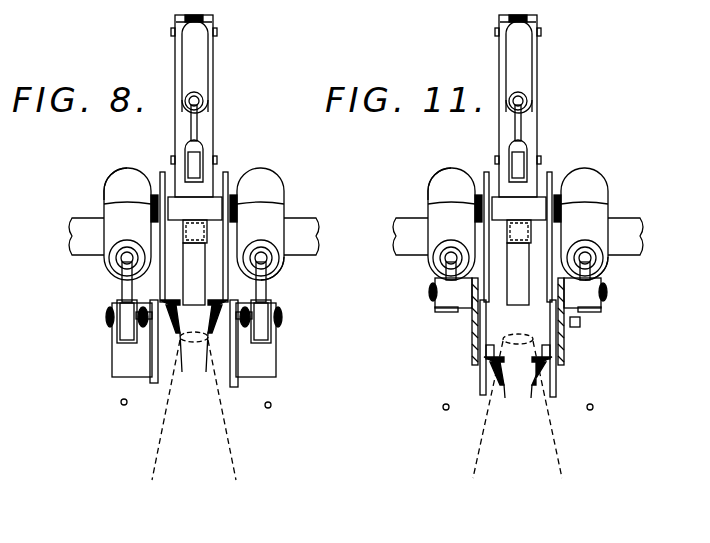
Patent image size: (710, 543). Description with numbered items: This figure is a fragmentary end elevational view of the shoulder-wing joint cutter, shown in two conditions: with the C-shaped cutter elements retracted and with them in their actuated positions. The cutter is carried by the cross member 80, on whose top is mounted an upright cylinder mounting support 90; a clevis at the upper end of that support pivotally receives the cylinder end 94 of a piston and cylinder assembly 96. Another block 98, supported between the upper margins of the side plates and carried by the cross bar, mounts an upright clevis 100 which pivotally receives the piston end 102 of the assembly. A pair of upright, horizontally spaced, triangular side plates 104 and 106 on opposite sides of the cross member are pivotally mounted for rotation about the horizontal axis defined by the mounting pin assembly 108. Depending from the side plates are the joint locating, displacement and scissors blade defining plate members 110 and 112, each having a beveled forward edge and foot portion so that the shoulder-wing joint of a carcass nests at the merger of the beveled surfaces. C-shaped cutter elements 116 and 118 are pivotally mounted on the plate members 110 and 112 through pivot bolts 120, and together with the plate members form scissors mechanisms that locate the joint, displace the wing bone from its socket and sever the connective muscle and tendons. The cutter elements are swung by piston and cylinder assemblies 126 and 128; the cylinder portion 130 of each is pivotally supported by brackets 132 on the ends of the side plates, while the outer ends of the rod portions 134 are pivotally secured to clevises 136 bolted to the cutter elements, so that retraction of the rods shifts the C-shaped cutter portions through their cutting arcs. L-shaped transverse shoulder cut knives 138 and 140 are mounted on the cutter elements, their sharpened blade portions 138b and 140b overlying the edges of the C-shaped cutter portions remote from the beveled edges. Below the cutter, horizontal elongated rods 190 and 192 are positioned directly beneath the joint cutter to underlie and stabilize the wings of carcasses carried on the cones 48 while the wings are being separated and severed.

In FIG. 8, the cones 48 is at (150, 432).
In FIG. 11, the cones 48 is at (460, 463).
In FIG. 8, the cross member 80 is at (208, 237).
In FIG. 11, the cross member 80 is at (532, 240).
In FIG. 8, the cylinder mounting support 90 is at (212, 82).
In FIG. 11, the cylinder mounting support 90 is at (537, 84).
In FIG. 8, the cylinder end 94 is at (187, 52).
In FIG. 11, the cylinder end 94 is at (507, 58).
In FIG. 8, the piston and cylinder assembly 96 is at (218, 51).
In FIG. 11, the piston and cylinder assembly 96 is at (544, 52).
In FIG. 8, the block 98 is at (200, 205).
In FIG. 11, the block 98 is at (522, 205).
In FIG. 8, the upright clevis 100 is at (206, 142).
In FIG. 11, the upright clevis 100 is at (537, 145).
In FIG. 8, the piston end 102 is at (200, 124).
In FIG. 11, the piston end 102 is at (523, 128).
In FIG. 8, the side plate 104 is at (171, 182).
In FIG. 11, the side plate 104 is at (490, 182).
In FIG. 8, the side plate 106 is at (288, 202).
In FIG. 11, the side plate 106 is at (610, 200).
In FIG. 8, the mounting pin assembly 108 is at (104, 204).
In FIG. 11, the mounting pin assembly 108 is at (437, 205).
In FIG. 8, the plate member 110 is at (120, 290).
In FIG. 11, the plate member 110 is at (468, 388).
In FIG. 8, the plate member 112 is at (280, 313).
In FIG. 11, the plate member 112 is at (574, 388).
In FIG. 8, the C-shaped cutter element 116 is at (143, 363).
In FIG. 11, the C-shaped cutter element 116 is at (462, 322).
In FIG. 8, the C-shaped cutter element 118 is at (264, 364).
In FIG. 11, the C-shaped cutter element 118 is at (640, 353).
In FIG. 11, the pivot bolt 120 is at (470, 338).
In FIG. 8, the piston and cylinder assembly 126 is at (109, 167).
In FIG. 11, the piston and cylinder assembly 126 is at (430, 169).
In FIG. 8, the piston and cylinder assembly 128 is at (294, 184).
In FIG. 11, the piston and cylinder assembly 128 is at (616, 185).
In FIG. 8, the cylinder portion 130 is at (98, 178).
In FIG. 11, the cylinder portion 130 is at (437, 182).
In FIG. 8, the bracket 132 is at (155, 182).
In FIG. 11, the bracket 132 is at (476, 182).
In FIG. 8, the rod portion 134 is at (122, 286).
In FIG. 11, the rod portion 134 is at (440, 266).
In FIG. 8, the clevis 136 is at (123, 350).
In FIG. 11, the clevis 136 is at (437, 288).
In FIG. 8, the L-shaped transverse shoulder cut knife 138 is at (174, 362).
In FIG. 11, the L-shaped transverse shoulder cut knife 138 is at (500, 390).
In FIG. 8, the L-shaped transverse shoulder cut knife 140 is at (226, 366).
In FIG. 11, the L-shaped transverse shoulder cut knife 140 is at (550, 388).
In FIG. 11, the blade portion 138b is at (482, 366).
In FIG. 11, the blade portion 140b is at (564, 366).
In FIG. 8, the rod 190 is at (120, 402).
In FIG. 11, the rod 190 is at (442, 407).
In FIG. 8, the rod 192 is at (272, 410).
In FIG. 11, the rod 192 is at (594, 408).